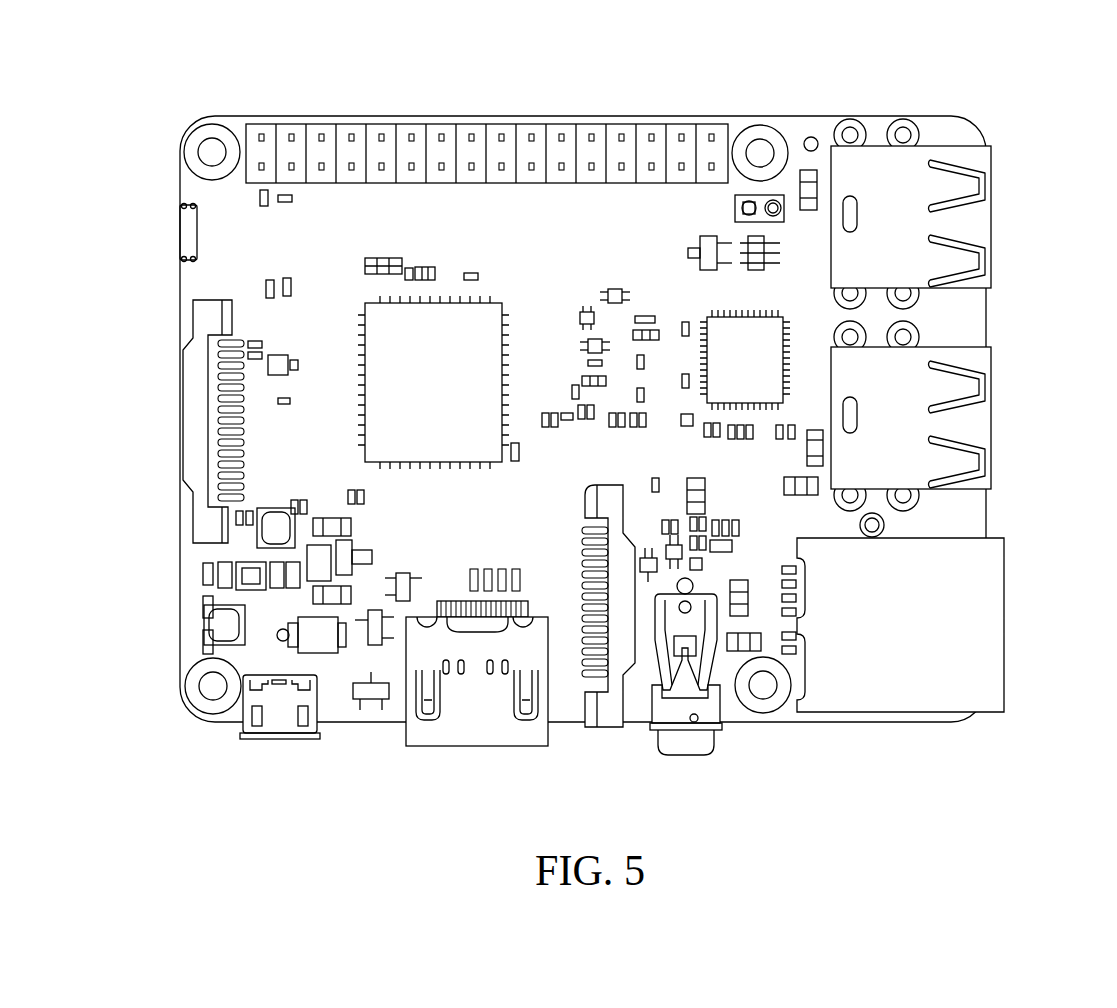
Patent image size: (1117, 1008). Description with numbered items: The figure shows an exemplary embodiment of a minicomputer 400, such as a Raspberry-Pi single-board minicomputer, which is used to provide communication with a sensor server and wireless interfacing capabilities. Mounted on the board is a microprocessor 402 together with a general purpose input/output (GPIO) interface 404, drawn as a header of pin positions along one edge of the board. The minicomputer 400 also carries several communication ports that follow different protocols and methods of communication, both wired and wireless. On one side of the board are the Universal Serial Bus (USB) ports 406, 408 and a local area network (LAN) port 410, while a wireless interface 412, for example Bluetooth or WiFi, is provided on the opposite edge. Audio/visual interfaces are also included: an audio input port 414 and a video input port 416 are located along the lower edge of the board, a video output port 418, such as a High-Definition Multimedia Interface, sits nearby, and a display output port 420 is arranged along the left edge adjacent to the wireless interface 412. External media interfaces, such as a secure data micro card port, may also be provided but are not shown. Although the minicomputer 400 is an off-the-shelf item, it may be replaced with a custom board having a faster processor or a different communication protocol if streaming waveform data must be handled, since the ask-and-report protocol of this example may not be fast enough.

The minicomputer 400 is at (140, 74).
The microprocessor 402 is at (400, 398).
The general purpose input/output (GPIO) interface 404 is at (483, 122).
The Universal Serial Bus (USB) port 406 is at (977, 213).
The Universal Serial Bus (USB) port 408 is at (977, 413).
The local area network (LAN) port 410 is at (990, 622).
The wireless interface 412 is at (182, 232).
The audio input port 414 is at (680, 738).
The video input port 416 is at (600, 728).
The video output port 418 is at (473, 728).
The display output port 420 is at (197, 424).